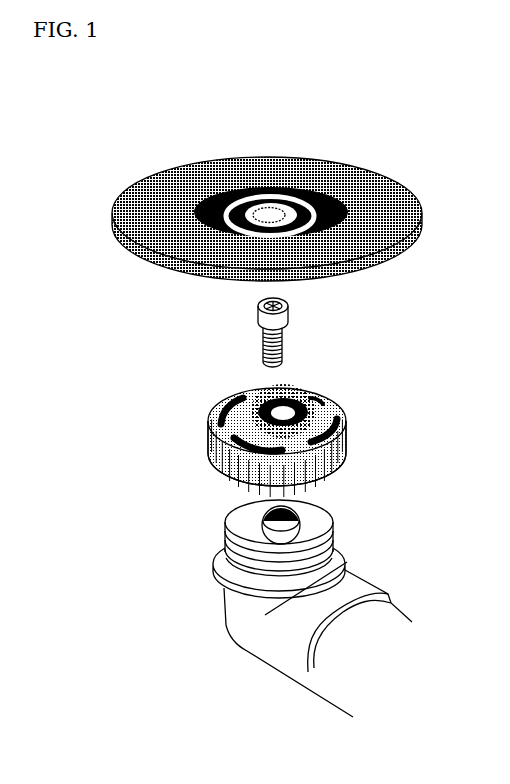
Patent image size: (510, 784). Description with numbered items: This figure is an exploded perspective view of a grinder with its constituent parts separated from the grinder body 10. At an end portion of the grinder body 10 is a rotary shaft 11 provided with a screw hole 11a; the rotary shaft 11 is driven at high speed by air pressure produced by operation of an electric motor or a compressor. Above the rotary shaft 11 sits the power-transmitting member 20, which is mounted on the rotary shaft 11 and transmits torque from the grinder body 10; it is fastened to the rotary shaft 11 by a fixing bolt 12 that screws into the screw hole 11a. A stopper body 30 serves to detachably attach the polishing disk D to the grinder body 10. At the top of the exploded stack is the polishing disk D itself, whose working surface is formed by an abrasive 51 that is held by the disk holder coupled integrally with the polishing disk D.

The polishing disk D is at (267, 185).
The abrasive 51 is at (360, 163).
The fixing bolt 12 is at (283, 338).
The power-transmitting member 20 is at (235, 392).
The stopper body 30 is at (350, 443).
The rotary shaft 11 is at (287, 532).
The screw hole 11a is at (262, 522).
The grinder body 10 is at (215, 607).